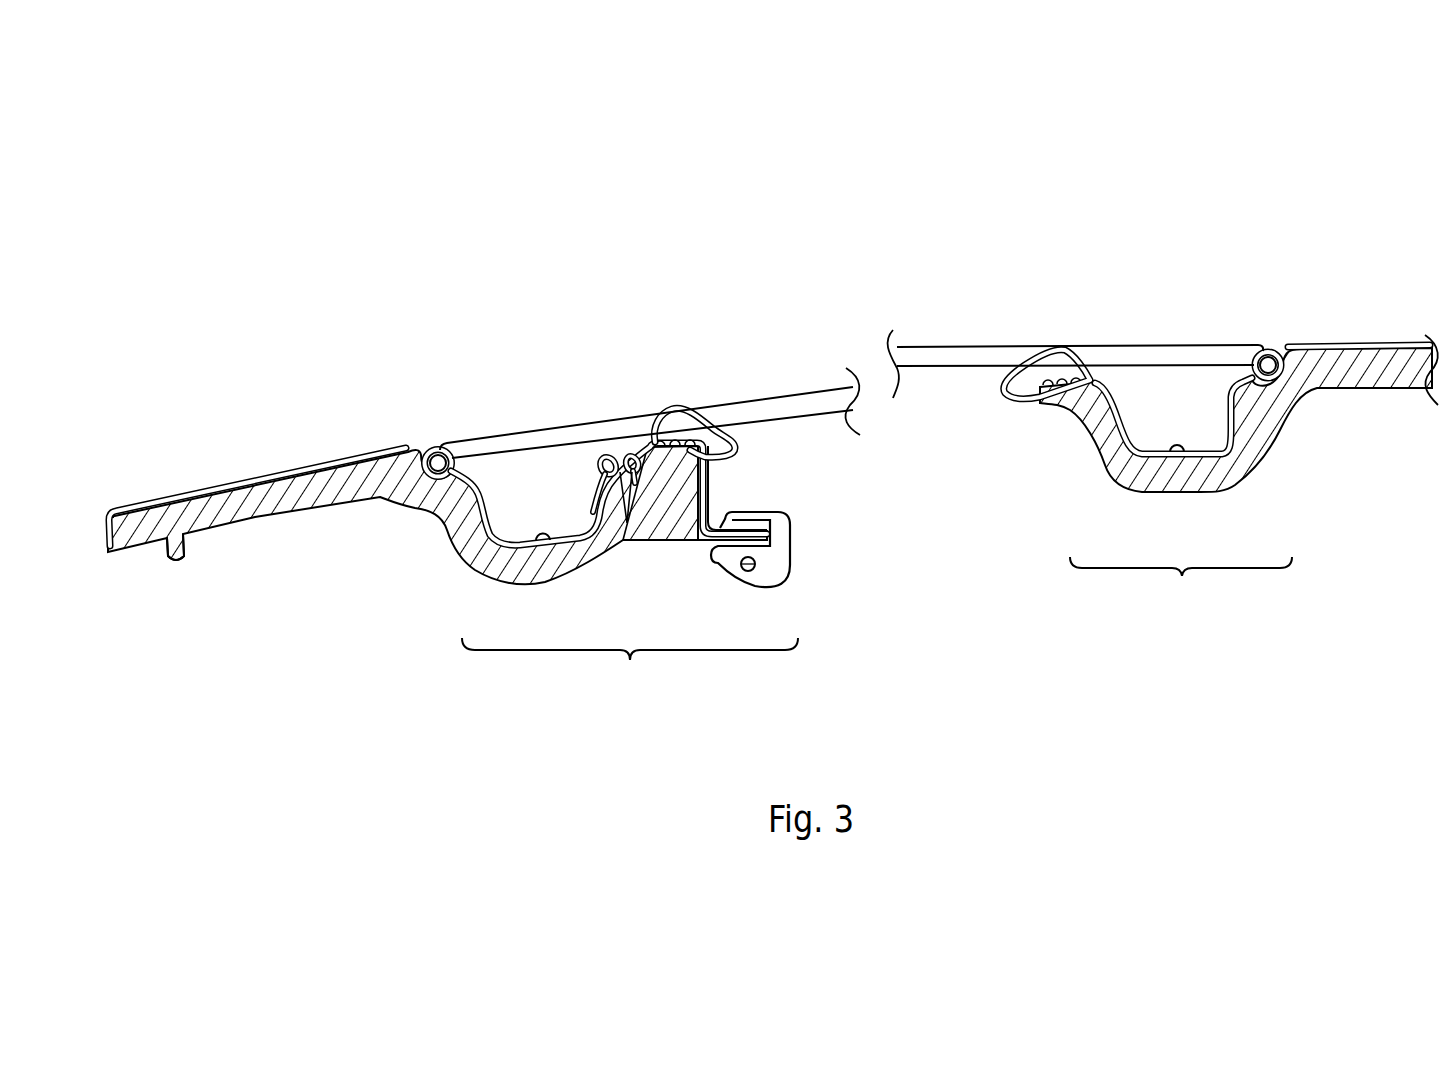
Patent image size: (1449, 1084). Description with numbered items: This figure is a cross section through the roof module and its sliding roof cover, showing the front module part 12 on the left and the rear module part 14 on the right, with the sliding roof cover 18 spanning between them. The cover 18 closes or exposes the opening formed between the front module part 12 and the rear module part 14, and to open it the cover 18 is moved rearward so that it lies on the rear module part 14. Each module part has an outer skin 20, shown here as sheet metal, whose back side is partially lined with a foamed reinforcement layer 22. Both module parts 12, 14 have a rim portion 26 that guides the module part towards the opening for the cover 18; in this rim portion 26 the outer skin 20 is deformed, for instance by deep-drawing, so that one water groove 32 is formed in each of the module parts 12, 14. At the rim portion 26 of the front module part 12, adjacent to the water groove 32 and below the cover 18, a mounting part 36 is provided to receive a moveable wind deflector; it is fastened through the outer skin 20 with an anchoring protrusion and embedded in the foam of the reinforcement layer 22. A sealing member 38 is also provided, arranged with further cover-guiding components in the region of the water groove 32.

The front module part 12 is at (416, 370).
The rear module part 14 is at (1279, 272).
The sliding roof cover 18 is at (746, 410).
The outer skin 20 is at (268, 486).
The foamed reinforcement layer 22 is at (490, 567).
The rim portion 26 is at (877, 625).
The water groove 32 is at (556, 540).
The mounting part 36 is at (603, 457).
The sealing member 38 is at (737, 447).